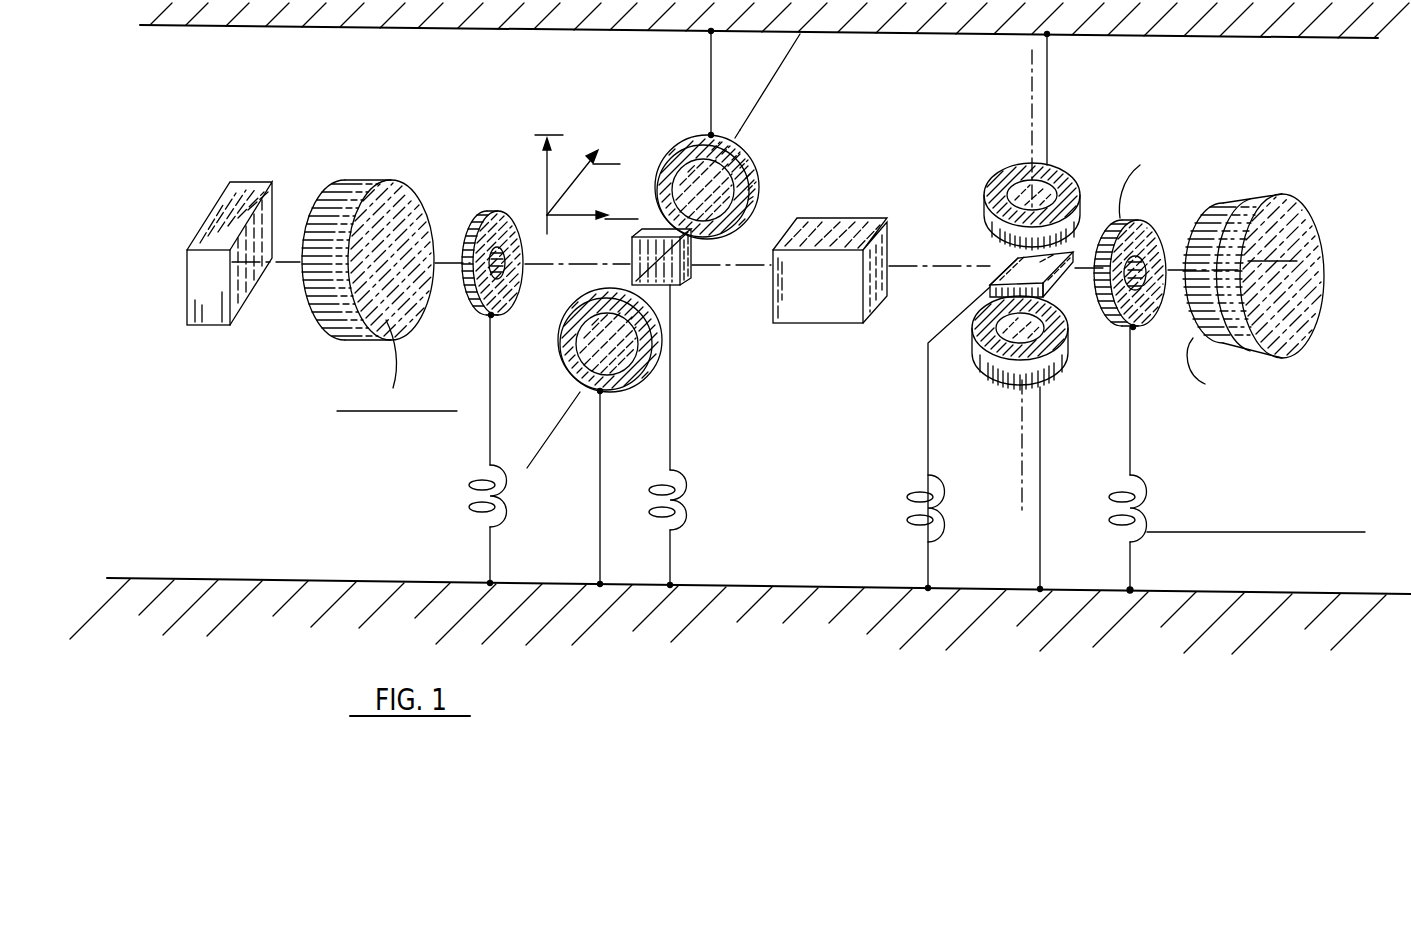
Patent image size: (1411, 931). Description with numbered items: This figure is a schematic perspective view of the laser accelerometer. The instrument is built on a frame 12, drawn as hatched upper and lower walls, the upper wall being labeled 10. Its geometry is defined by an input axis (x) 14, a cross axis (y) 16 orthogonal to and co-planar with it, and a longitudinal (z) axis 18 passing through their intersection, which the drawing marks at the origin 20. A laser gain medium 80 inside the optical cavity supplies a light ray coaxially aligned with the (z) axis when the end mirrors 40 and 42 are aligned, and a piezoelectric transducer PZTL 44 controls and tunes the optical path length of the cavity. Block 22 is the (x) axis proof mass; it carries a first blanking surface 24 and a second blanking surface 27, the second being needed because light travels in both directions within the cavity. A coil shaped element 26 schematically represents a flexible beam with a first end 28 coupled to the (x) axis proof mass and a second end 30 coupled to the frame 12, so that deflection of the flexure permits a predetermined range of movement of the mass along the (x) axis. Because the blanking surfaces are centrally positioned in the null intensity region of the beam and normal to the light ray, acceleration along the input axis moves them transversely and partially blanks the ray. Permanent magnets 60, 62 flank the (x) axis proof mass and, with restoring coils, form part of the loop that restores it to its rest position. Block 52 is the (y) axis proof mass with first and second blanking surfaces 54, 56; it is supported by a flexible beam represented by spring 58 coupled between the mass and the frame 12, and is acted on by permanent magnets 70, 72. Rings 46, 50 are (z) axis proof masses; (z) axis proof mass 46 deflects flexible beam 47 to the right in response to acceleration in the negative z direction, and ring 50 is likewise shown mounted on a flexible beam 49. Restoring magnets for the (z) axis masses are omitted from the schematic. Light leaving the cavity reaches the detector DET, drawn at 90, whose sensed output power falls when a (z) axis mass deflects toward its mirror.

The upper housing wall 10 is at (1200, 37).
The frame 12 is at (1205, 591).
The input axis (x) 14 is at (578, 172).
The cross axis (y) 16 is at (548, 177).
The (z) axis 18 is at (573, 212).
The coordinate origin 20 is at (554, 236).
The (x) axis proof mass 22 is at (680, 283).
The first blanking surface 24 is at (688, 252).
The flexible beam 26 is at (678, 509).
The second blanking surface 27 is at (598, 282).
The first end 28 is at (672, 394).
The second end 30 is at (670, 566).
The end mirror 40 is at (407, 230).
The end mirror 42 is at (1193, 221).
The piezoelectric transducer (PZTL) 44 is at (1295, 296).
The (z) axis proof mass 46 is at (1238, 171).
The flexible beam 47 is at (1143, 497).
The flexible beam 49 is at (485, 510).
The (z) axis proof mass 50 is at (510, 230).
The (y) axis proof mass 52 is at (1031, 274).
The first blanking surface 54 is at (1050, 280).
The second blanking surface 56 is at (1010, 266).
The flexible beam (spring) 58 is at (927, 513).
The permanent magnet 60 is at (560, 340).
The permanent magnet 62 is at (752, 152).
The permanent magnet 70 is at (1062, 368).
The permanent magnet 72 is at (1050, 170).
The laser gain medium 80 is at (836, 324).
The detector 90 is at (212, 326).